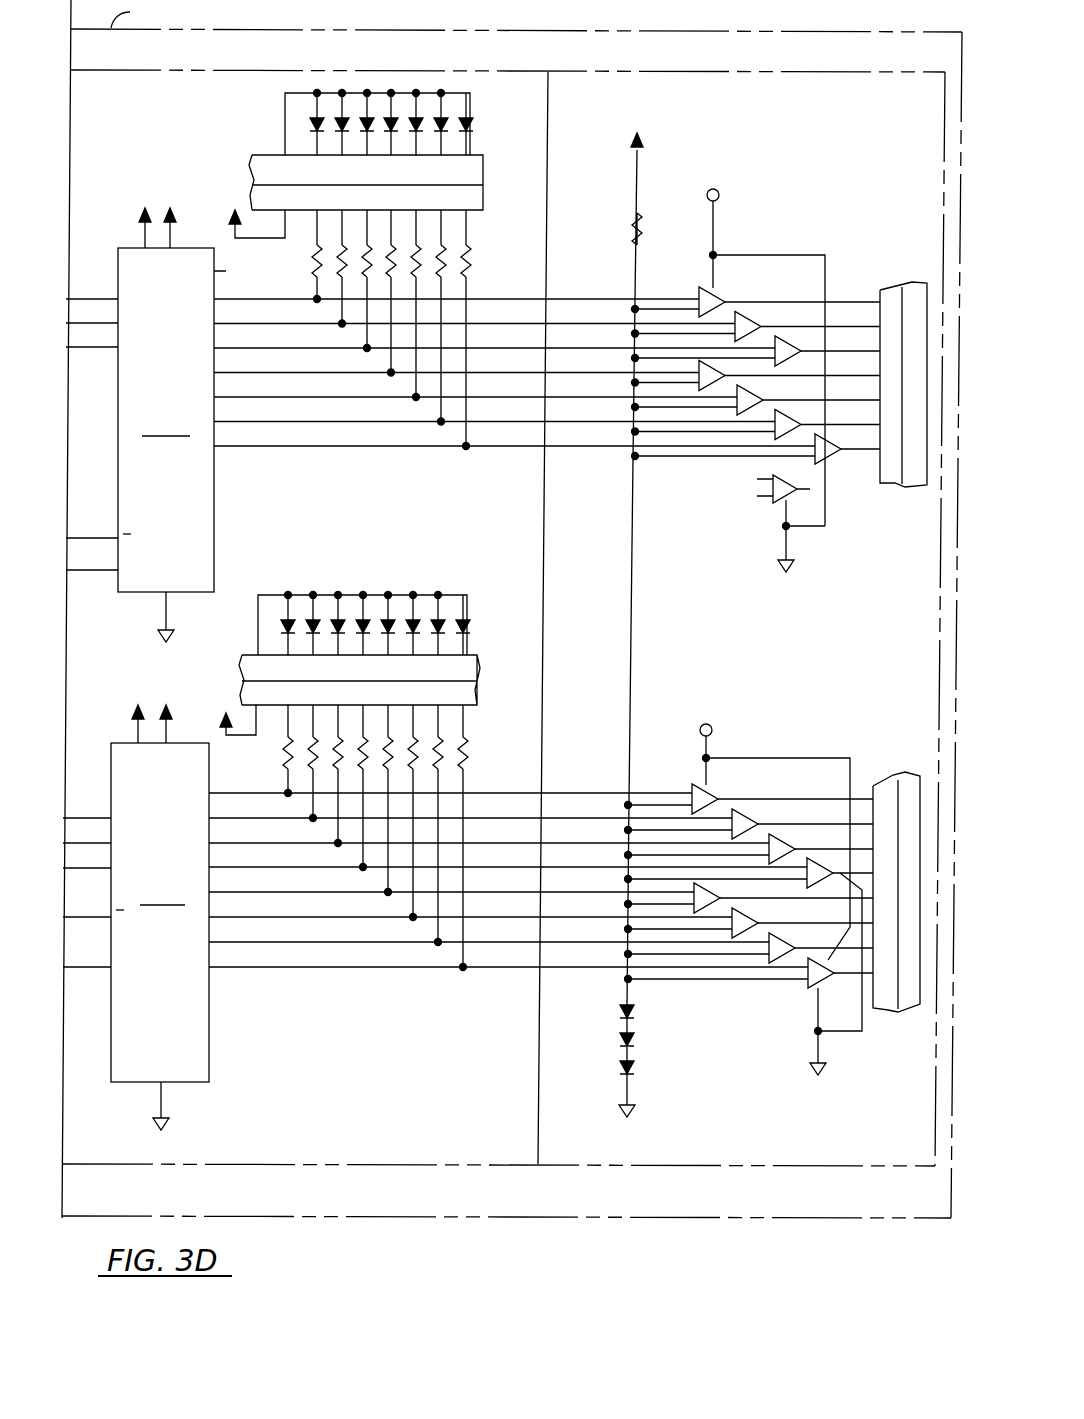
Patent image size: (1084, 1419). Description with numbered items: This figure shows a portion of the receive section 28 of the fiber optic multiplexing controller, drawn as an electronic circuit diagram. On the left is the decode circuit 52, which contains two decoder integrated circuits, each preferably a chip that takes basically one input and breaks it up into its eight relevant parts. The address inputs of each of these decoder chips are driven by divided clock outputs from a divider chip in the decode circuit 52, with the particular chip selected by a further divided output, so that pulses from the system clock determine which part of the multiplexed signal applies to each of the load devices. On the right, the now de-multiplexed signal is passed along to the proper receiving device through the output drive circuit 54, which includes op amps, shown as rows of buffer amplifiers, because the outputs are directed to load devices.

The receive section 28 is at (580, 32).
The decode circuit 52 is at (210, 1184).
The output drive circuit 54 is at (626, 1186).